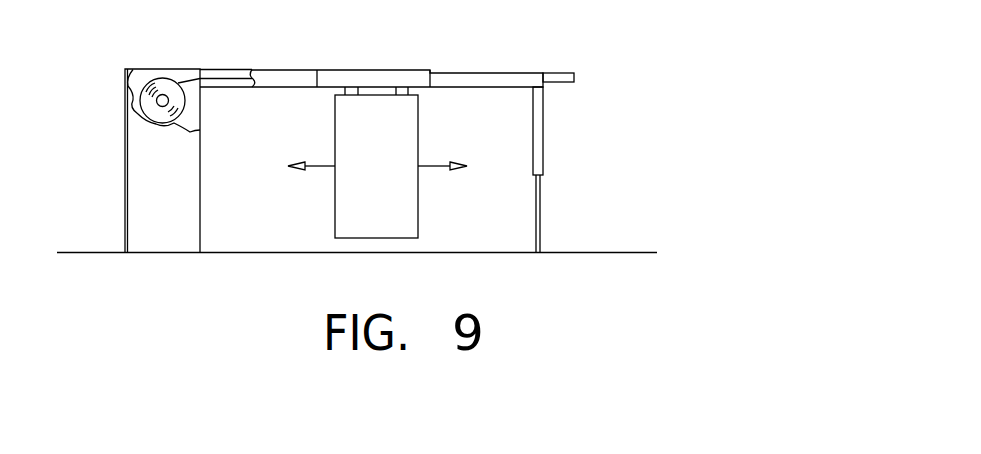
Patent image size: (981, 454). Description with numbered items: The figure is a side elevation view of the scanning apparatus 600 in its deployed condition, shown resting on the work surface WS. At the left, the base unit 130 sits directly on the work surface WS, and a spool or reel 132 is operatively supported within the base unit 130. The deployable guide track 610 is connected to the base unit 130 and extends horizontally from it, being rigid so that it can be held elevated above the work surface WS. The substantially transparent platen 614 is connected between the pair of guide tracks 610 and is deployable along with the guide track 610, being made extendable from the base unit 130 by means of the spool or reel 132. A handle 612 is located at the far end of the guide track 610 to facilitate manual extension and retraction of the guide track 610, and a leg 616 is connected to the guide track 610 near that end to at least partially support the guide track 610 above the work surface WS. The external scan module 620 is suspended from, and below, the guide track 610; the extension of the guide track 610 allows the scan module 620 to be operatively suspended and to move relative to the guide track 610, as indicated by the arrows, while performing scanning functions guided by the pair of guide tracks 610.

The scanning apparatus 600 is at (658, 37).
The base unit 130 is at (135, 165).
The spool or reel 132 is at (162, 95).
The transparent platen 614 is at (217, 72).
The guide track 610 is at (287, 73).
The handle 612 is at (576, 78).
The leg 616 is at (544, 143).
The scan module 620 is at (345, 212).
The work surface WS is at (592, 251).